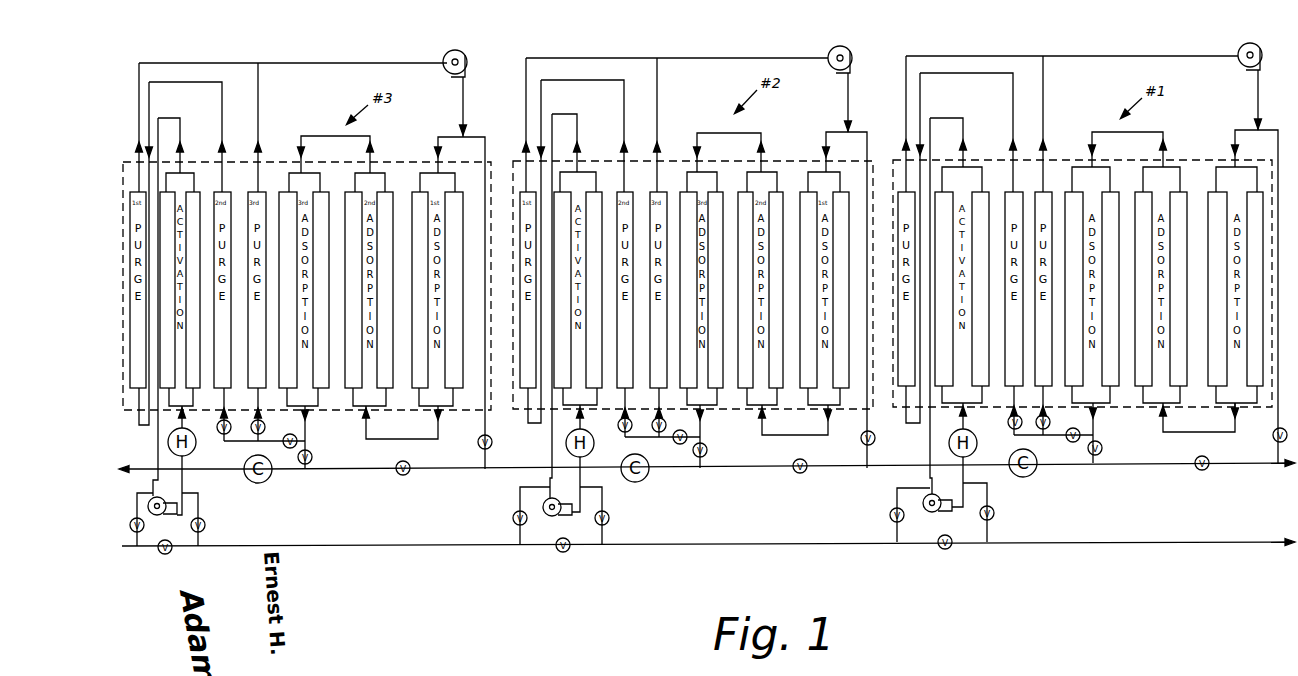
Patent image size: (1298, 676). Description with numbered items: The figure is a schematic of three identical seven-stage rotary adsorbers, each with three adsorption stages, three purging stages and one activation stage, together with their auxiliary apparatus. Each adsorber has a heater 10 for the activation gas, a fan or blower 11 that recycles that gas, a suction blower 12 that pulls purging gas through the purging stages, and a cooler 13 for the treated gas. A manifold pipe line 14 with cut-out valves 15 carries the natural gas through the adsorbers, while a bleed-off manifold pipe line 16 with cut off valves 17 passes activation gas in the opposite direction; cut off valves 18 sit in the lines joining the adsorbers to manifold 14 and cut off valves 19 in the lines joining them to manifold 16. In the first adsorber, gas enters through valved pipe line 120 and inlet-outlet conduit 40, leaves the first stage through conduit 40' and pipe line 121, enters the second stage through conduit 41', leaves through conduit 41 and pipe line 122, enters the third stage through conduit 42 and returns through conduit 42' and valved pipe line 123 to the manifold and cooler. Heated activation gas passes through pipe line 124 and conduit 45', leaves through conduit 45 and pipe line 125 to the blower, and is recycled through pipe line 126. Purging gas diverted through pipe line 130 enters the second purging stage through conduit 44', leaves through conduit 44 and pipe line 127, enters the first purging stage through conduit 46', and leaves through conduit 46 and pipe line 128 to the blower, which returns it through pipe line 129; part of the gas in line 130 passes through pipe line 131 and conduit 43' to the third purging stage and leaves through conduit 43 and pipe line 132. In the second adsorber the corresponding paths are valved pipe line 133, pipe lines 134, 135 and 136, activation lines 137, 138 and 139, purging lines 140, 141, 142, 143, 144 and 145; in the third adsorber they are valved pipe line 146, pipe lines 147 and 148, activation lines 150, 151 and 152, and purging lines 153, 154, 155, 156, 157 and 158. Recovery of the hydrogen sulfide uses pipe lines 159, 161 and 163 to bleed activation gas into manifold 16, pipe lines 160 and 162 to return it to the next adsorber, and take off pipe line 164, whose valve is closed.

The heater 10 is at (595, 448).
The fan or blower 11 is at (165, 516).
The blower 12 is at (466, 58).
The heat exchanger or cooler 13 is at (272, 479).
The header or manifold pipe line 14 is at (1272, 466).
The cut-out valves 15 is at (402, 476).
The header or manifold pipe line 16 is at (1060, 544).
The cut off valves 17 is at (172, 552).
The cut off valves 18 is at (312, 458).
The cut off valves 19 is at (139, 533).
The inlet-outlet conduit 40 is at (1238, 262).
The inlet-outlet pipe 41 is at (1165, 260).
The inlet-outlet conduit 42 is at (1094, 262).
The inlet-outlet conduit 43 is at (1054, 259).
The inlet-outlet conduit 44 is at (1021, 257).
The inlet-outlet conduit 45 is at (965, 259).
The inlet-outlet conduit 46 is at (896, 221).
The inlet-outlet conduit 40' is at (1243, 406).
The inlet-outlet conduit 41' is at (1170, 406).
The inlet-outlet conduit 42' is at (1101, 406).
The inlet-outlet conduit 43' is at (1056, 410).
The inlet-outlet conduit 44' is at (1026, 410).
The inlet-outlet conduit 45' is at (959, 409).
The inlet-outlet conduit 46' is at (897, 251).
The valved pipe line 120 is at (1236, 428).
The pipe line 121 is at (1182, 434).
The pipe line 122 is at (1140, 132).
The valved pipe line 123 is at (1096, 432).
The pipe line 124 is at (1008, 422).
The pipe line 125 is at (940, 118).
The pipe line 126 is at (963, 472).
The pipe line 127 is at (944, 76).
The pipe line 128 is at (1012, 56).
The pipe line 129 is at (1264, 115).
The pipe line 130 is at (1066, 438).
The pipe line 131 is at (1051, 422).
The pipe line 132 is at (1044, 95).
The valved pipe line 133 is at (869, 143).
The pipe line 134 is at (808, 438).
The pipe line 135 is at (740, 133).
The pipe line 136 is at (704, 430).
The pipe line 137 is at (582, 432).
The pipe line 138 is at (567, 114).
The pipe line 139 is at (580, 500).
The pipe line 140 is at (590, 80).
The pipe line 141 is at (656, 58).
The pipe line 142 is at (852, 110).
The pipe line 143 is at (661, 440).
The pipe line 144 is at (306, 435).
The pipe line 145 is at (660, 105).
The valved pipe line 146 is at (487, 152).
The pipe line 147 is at (378, 440).
The pipe line 148 is at (312, 138).
The pipe line 150 is at (232, 427).
The pipe line 151 is at (170, 118).
The pipe line 152 is at (190, 482).
The pipe line 153 is at (180, 82).
The pipe line 154 is at (249, 63).
The pipe line 155 is at (465, 117).
The pipe line 156 is at (196, 464).
The pipe line 157 is at (266, 427).
The pipe line 158 is at (258, 104).
The pipe line 159 is at (205, 500).
The pipe line 160 is at (520, 487).
The pipe line 161 is at (604, 497).
The pipe line 162 is at (896, 488).
The pipe line 163 is at (989, 494).
The take off pipe line 164 is at (136, 475).